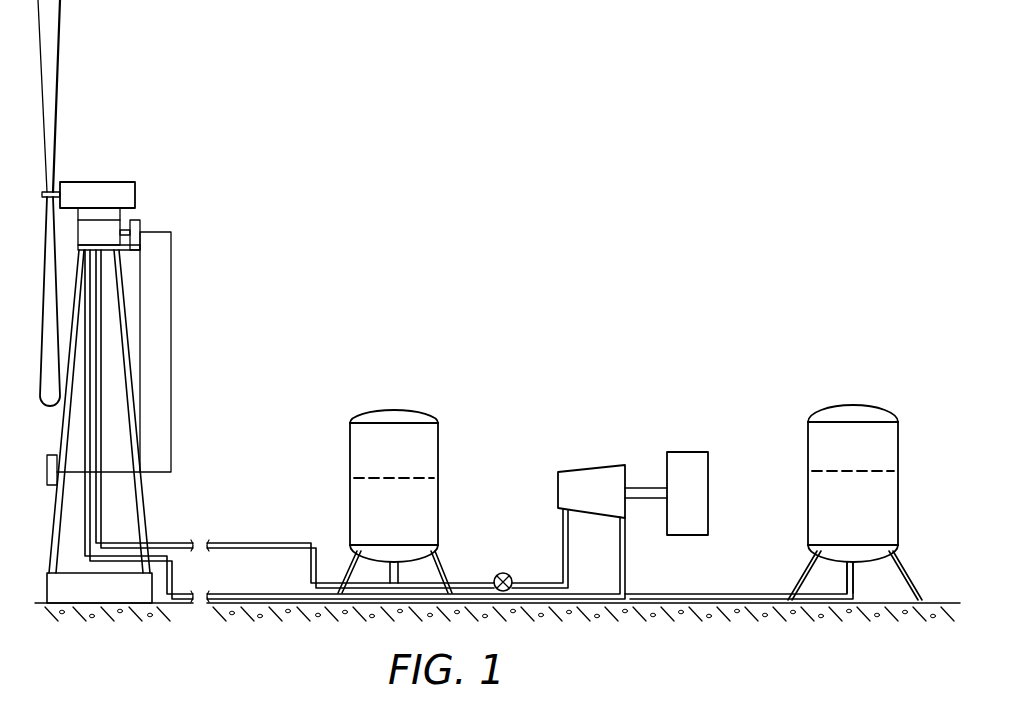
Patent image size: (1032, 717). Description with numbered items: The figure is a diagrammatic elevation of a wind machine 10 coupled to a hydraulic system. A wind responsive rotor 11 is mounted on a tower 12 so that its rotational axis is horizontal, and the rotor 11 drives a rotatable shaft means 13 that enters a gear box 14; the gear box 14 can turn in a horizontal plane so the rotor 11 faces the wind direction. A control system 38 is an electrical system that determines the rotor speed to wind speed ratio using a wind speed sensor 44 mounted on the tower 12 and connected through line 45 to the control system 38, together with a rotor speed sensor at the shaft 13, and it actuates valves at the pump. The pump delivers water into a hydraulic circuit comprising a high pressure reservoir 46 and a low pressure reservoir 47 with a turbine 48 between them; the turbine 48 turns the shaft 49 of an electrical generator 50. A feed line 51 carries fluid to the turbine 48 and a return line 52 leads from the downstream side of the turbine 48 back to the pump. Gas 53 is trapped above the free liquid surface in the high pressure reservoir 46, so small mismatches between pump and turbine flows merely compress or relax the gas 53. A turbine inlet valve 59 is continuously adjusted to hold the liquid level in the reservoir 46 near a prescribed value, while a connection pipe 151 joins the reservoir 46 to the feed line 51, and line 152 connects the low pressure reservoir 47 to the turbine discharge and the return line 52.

The wind machine 10 is at (137, 157).
The wind responsive rotor 11 is at (57, 50).
The tower 12 is at (131, 361).
The rotatable shaft means 13 is at (53, 184).
The gear box 14 is at (137, 185).
The control system 38 is at (141, 222).
The wind speed sensor 44 is at (53, 455).
The line 45 is at (172, 248).
The high pressure reservoir 46 is at (438, 471).
The low pressure reservoir 47 is at (808, 427).
The turbine 48 is at (593, 467).
The shaft 49 is at (640, 488).
The electrical generator 50 is at (693, 452).
The feed line 51 is at (237, 542).
The return line 52 is at (262, 593).
The gas 53 is at (424, 496).
The turbine inlet valve 59 is at (505, 572).
The connection pipe 151 is at (395, 566).
The line 152 is at (713, 592).